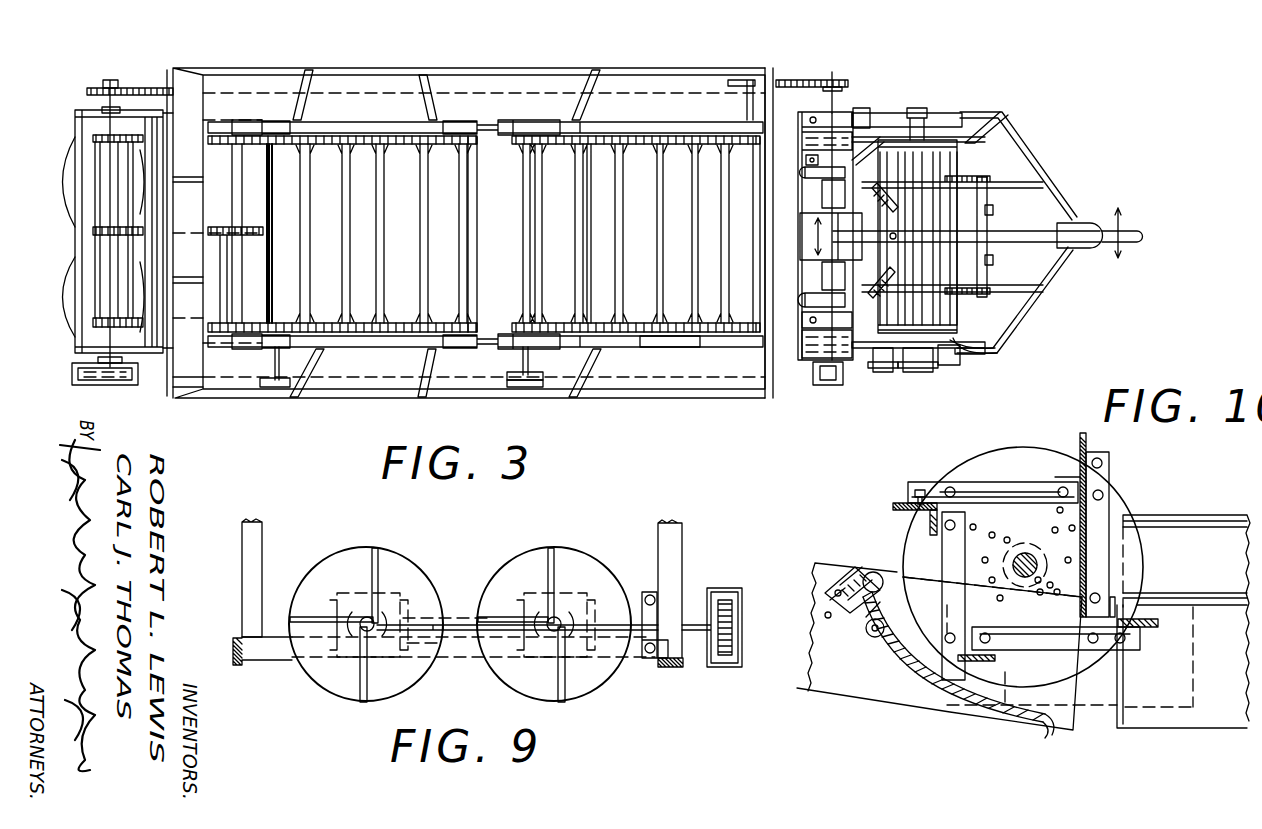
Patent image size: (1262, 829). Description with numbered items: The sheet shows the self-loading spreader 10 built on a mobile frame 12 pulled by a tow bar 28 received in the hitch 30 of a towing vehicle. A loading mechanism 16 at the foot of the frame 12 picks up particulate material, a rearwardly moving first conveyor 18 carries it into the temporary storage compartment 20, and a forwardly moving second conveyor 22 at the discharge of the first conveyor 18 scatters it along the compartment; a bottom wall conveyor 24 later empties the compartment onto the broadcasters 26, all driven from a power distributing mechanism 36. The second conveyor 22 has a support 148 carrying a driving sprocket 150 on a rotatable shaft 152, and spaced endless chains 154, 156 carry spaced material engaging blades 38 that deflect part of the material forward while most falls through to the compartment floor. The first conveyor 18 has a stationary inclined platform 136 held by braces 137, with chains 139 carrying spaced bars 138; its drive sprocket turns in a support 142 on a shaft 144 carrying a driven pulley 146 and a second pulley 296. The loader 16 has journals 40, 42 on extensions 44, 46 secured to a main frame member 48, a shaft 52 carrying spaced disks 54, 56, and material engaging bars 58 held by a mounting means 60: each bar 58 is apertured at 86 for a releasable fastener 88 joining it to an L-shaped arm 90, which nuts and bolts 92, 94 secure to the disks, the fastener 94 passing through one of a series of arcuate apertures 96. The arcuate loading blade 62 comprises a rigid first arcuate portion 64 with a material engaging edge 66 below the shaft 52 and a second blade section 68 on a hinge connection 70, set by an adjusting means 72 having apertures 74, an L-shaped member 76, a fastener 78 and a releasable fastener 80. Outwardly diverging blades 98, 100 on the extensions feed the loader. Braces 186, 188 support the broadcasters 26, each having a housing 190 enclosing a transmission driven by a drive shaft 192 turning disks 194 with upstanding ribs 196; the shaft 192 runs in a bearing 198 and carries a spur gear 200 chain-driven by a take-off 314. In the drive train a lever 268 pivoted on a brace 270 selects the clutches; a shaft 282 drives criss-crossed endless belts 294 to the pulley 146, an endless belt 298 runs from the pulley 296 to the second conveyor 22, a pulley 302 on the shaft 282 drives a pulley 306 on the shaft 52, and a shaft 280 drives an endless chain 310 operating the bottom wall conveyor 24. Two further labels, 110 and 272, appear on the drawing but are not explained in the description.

In FIG. 3, the self-loading spreader 10 is at (873, 95).
In FIG. 3, the mobile frame 12 is at (785, 108).
In FIG. 3, the loading mechanism 16 is at (1030, 300).
In FIG. 10, the loading mechanism 16 is at (1145, 495).
In FIG. 3, the first conveyor 18 is at (650, 350).
In FIG. 3, the temporary storage compartment 20 is at (268, 62).
In FIG. 3, the second conveyor 22 is at (395, 348).
In FIG. 3, the bottom wall conveyor 24 is at (138, 130).
In FIG. 3, the broadcasters 26 is at (68, 135).
In FIG. 9, the broadcasters 26 is at (418, 552).
In FIG. 3, the tow bar 28 is at (1082, 222).
In FIG. 3, the hitch 30 is at (1095, 216).
In FIG. 3, the power distributing mechanism 36 is at (805, 275).
In FIG. 3, the material engaging blades 38 is at (372, 233).
In FIG. 3, the journal 40 is at (948, 368).
In FIG. 3, the journal 42 is at (918, 108).
In FIG. 10, the journal 42 is at (1040, 545).
In FIG. 3, the extension 44 is at (882, 374).
In FIG. 3, the extension 46 is at (887, 113).
In FIG. 10, the extension 46 is at (888, 676).
In FIG. 3, the main frame member 48 is at (838, 360).
In FIG. 3, the shaft 52 is at (975, 280).
In FIG. 10, the shaft 52 is at (1018, 555).
In FIG. 3, the disk 54 is at (948, 358).
In FIG. 3, the disk 56 is at (945, 140).
In FIG. 10, the disk 56 is at (1078, 458).
In FIG. 3, the material engaging bars 58 is at (945, 222).
In FIG. 10, the material engaging bars 58 is at (888, 505).
In FIG. 10, the mounting means 60 is at (958, 480).
In FIG. 10, the arcuate loading blade 62 is at (918, 690).
In FIG. 10, the first arcuate portion 64 is at (898, 668).
In FIG. 10, the material engaging edge 66 is at (1046, 730).
In FIG. 10, the second blade section 68 is at (874, 572).
In FIG. 10, the hinge connection 70 is at (866, 636).
In FIG. 10, the adjusting means 72 is at (843, 577).
In FIG. 10, the apertures 74 is at (826, 620).
In FIG. 10, the L-shaped member 76 is at (848, 580).
In FIG. 10, the fastener 78 is at (866, 617).
In FIG. 10, the releasable fastener 80 is at (832, 594).
In FIG. 10, the aperture 86 is at (912, 500).
In FIG. 10, the releasable fastener 88 is at (1098, 457).
In FIG. 10, the L-shaped arm 90 is at (995, 490).
In FIG. 10, the nut and bolt 92 is at (950, 486).
In FIG. 10, the nut and bolt 94 is at (1058, 488).
In FIG. 10, the apertures 96 is at (1052, 538).
In FIG. 3, the outwardly diverging blade 98 is at (962, 308).
In FIG. 3, the outwardly diverging blade 100 is at (1010, 126).
In FIG. 10, the outwardly diverging blade 100 is at (1234, 640).
In FIG. 3, the bearing 110 is at (850, 168).
In FIG. 3, the stationary inclined platform 136 is at (700, 222).
In FIG. 3, the braces 137 is at (655, 130).
In FIG. 3, the spaced bars 138 is at (750, 218).
In FIG. 3, the chains 139 is at (641, 148).
In FIG. 3, the support 142 is at (516, 120).
In FIG. 3, the shaft 144 is at (522, 212).
In FIG. 3, the driven pulley 146 is at (510, 372).
In FIG. 3, the support 148 is at (348, 350).
In FIG. 3, the driving sprocket 150 is at (858, 108).
In FIG. 3, the rotatable shaft 152 is at (267, 268).
In FIG. 3, the endless chain 154 is at (358, 320).
In FIG. 3, the endless chain 156 is at (365, 148).
In FIG. 9, the brace 186 is at (690, 553).
In FIG. 9, the brace 188 is at (240, 552).
In FIG. 9, the housing 190 is at (350, 590).
In FIG. 9, the drive shaft 192 is at (458, 622).
In FIG. 9, the disks 194 is at (378, 548).
In FIG. 9, the ribs 196 is at (312, 612).
In FIG. 9, the bearing 198 is at (648, 662).
In FIG. 9, the spur gear 200 is at (740, 600).
In FIG. 3, the lever 268 is at (1108, 246).
In FIG. 3, the brace 270 is at (872, 296).
In FIG. 3, the bar 272 is at (998, 190).
In FIG. 3, the shaft 280 is at (840, 98).
In FIG. 3, the shaft 282 is at (813, 370).
In FIG. 3, the endless belts 294 is at (690, 350).
In FIG. 3, the second pulley 296 is at (522, 390).
In FIG. 3, the endless belt 298 is at (445, 392).
In FIG. 3, the pulley 302 is at (818, 330).
In FIG. 3, the pulley 306 is at (918, 374).
In FIG. 3, the endless chain 310 is at (814, 78).
In FIG. 3, the take-off 314 is at (70, 365).